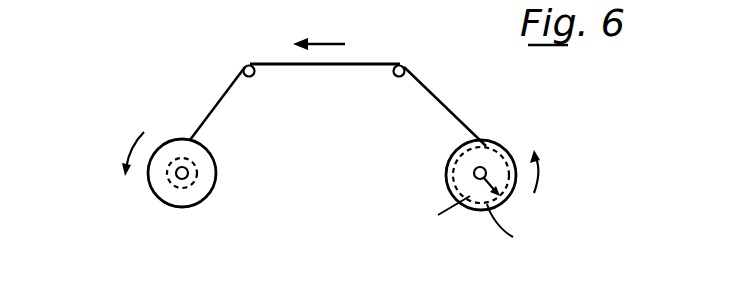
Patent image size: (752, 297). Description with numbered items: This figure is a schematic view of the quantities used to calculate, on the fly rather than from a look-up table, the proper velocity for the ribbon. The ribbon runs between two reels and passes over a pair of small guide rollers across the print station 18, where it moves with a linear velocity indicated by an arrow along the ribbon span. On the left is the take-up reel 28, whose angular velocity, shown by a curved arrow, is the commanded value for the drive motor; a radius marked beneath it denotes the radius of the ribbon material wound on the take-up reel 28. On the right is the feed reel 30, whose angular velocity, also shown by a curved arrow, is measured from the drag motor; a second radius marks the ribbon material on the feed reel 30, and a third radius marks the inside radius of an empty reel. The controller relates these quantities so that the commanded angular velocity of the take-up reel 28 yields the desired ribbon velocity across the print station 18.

The print station 18 is at (380, 54).
The take-up reel 28 is at (216, 172).
The feed reel 30 is at (505, 148).